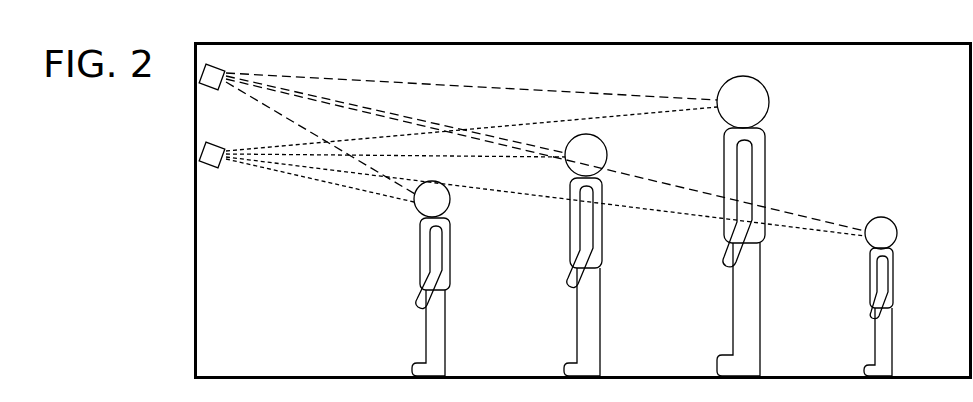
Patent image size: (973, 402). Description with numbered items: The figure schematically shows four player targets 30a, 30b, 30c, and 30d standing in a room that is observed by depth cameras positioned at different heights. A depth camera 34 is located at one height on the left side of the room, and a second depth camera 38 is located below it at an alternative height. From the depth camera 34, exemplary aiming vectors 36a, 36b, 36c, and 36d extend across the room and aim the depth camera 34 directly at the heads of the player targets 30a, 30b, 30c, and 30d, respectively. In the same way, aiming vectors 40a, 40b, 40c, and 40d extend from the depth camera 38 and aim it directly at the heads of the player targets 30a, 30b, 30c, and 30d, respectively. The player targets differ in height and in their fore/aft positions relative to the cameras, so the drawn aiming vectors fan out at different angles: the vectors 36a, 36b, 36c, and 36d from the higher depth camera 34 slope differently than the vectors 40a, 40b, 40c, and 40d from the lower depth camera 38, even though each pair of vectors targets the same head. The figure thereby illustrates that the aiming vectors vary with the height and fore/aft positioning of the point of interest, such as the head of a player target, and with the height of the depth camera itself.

The depth camera 34 is at (212, 65).
The depth camera 38 is at (212, 143).
The player target 30a is at (450, 222).
The player target 30b is at (602, 216).
The player target 30c is at (765, 143).
The player target 30d is at (893, 262).
The aiming vector 36a is at (305, 128).
The aiming vector 36b is at (516, 142).
The aiming vector 36c is at (626, 95).
The aiming vector 36d is at (802, 216).
The aiming vector 40a is at (348, 186).
The aiming vector 40b is at (472, 157).
The aiming vector 40c is at (643, 112).
The aiming vector 40d is at (790, 227).